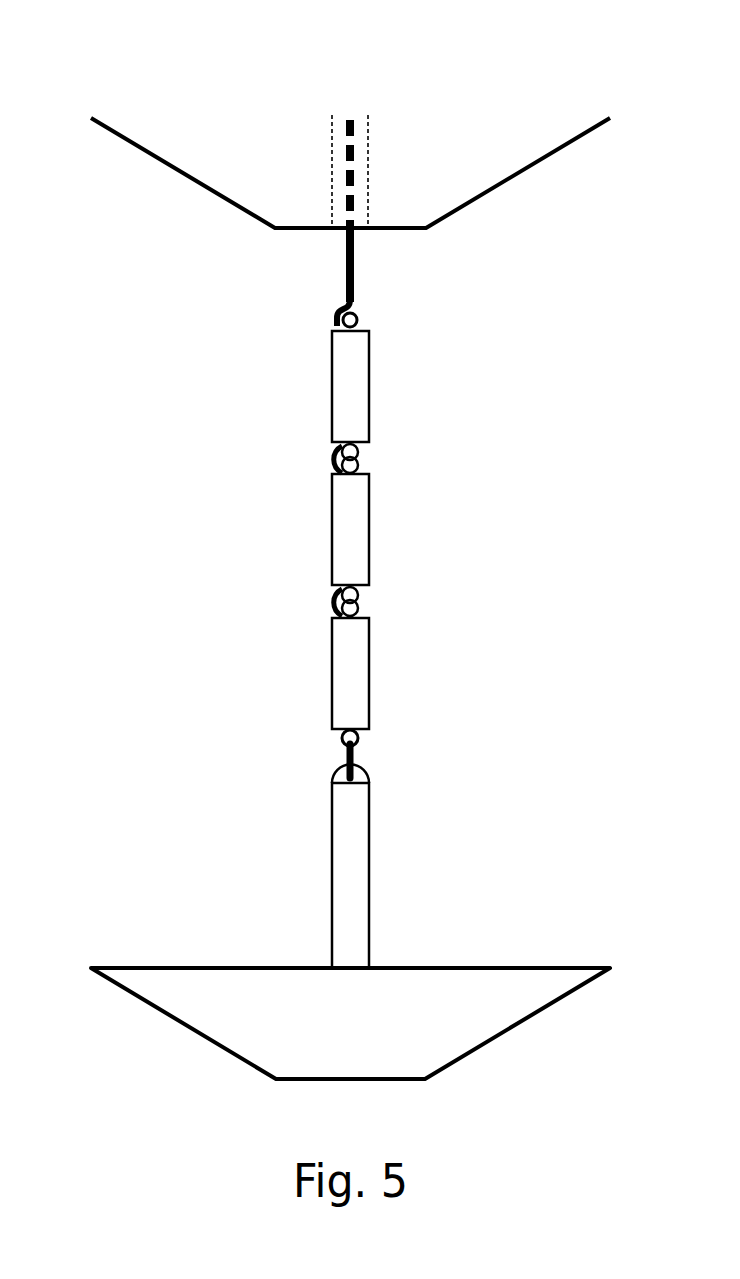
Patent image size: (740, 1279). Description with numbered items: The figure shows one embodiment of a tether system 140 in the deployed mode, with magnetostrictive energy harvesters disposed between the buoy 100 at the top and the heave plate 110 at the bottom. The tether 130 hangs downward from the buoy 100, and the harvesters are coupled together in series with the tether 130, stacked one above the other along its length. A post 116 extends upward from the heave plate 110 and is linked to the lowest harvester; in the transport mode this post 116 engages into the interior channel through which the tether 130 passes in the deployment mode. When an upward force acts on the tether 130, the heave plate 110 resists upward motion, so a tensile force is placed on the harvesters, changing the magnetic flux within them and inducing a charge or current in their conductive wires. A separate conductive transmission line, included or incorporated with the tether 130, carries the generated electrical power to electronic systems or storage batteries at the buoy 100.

The buoy 100 is at (186, 160).
The heave plate 110 is at (200, 1025).
The post 116 is at (350, 877).
The tether 130 is at (347, 246).
The tether system 140 is at (148, 50).